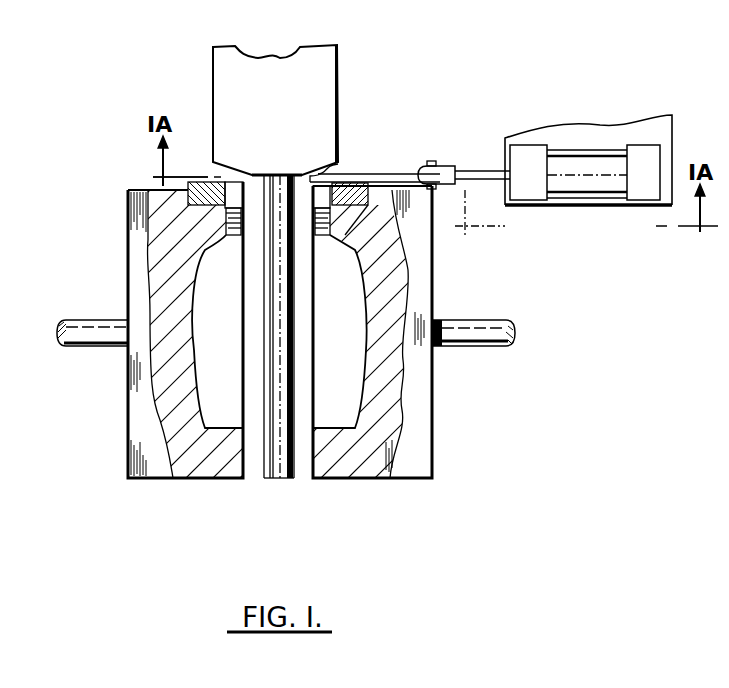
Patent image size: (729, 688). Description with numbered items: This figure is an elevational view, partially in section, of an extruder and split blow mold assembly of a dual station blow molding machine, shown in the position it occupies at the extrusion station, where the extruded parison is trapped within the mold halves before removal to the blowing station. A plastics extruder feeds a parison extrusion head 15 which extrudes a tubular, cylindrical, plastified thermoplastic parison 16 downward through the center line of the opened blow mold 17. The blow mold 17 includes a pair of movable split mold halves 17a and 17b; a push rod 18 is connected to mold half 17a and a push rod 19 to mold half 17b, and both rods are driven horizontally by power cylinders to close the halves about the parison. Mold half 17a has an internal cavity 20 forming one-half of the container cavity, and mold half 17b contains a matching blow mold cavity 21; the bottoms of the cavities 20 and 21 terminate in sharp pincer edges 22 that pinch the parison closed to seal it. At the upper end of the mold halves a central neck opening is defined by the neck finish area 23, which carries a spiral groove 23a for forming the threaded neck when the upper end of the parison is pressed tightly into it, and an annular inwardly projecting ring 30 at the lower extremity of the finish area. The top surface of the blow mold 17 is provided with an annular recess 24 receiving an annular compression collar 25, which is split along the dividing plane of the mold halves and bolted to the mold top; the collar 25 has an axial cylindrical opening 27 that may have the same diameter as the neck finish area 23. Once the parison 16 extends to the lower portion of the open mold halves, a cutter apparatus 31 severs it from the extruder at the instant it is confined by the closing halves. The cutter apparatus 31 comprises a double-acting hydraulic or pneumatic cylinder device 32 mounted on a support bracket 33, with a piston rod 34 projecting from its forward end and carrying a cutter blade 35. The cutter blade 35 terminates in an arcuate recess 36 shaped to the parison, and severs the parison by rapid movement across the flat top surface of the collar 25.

The parison extrusion head 15 is at (326, 88).
The parison 16 is at (280, 478).
The blow mold 17 is at (204, 498).
The mold half 17a is at (172, 420).
The mold half 17b is at (389, 397).
The push rod 18 is at (78, 322).
The push rod 19 is at (490, 322).
The internal cavity 20 is at (228, 346).
The blow mold cavity 21 is at (348, 342).
The pincer edges 22 is at (244, 430).
The neck finish area 23 is at (248, 232).
The spiral groove 23a is at (388, 232).
The annular recess 24 is at (150, 228).
The annular compression collar 25 is at (196, 177).
The axial cylindrical opening 27 is at (233, 190).
The annular inwardly projecting ring 30 is at (328, 236).
The cutter apparatus 31 is at (559, 110).
The cylinder device 32 is at (586, 176).
The support bracket 33 is at (657, 132).
The piston rod 34 is at (477, 172).
The cutter blade 35 is at (370, 177).
The arcuate recess 36 is at (337, 174).